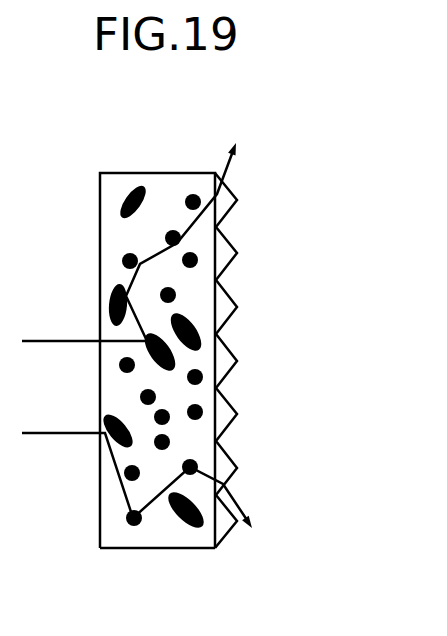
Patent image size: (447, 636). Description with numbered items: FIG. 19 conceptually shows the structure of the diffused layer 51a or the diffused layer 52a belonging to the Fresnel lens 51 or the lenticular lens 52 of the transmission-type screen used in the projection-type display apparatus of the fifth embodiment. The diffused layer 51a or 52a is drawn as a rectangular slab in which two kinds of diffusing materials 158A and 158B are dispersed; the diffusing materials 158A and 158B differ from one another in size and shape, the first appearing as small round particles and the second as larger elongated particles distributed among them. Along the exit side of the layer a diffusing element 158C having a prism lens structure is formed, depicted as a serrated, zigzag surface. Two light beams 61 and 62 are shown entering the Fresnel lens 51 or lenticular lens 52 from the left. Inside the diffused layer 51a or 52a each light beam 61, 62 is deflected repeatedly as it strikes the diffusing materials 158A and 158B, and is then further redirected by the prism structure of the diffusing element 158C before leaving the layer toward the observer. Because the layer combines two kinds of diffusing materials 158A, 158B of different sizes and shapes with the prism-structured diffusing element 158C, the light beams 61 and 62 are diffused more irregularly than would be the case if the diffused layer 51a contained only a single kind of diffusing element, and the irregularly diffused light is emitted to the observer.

The Fresnel lens 51 is at (213, 344).
The lenticular lens 52 is at (213, 344).
The diffused layer 51a is at (157, 574).
The diffused layer 52a is at (165, 535).
The light beam 61 is at (58, 340).
The light beam 62 is at (52, 435).
The diffusing material 158A is at (198, 258).
The diffusing material 158B is at (197, 328).
The diffusing element 158C is at (223, 412).